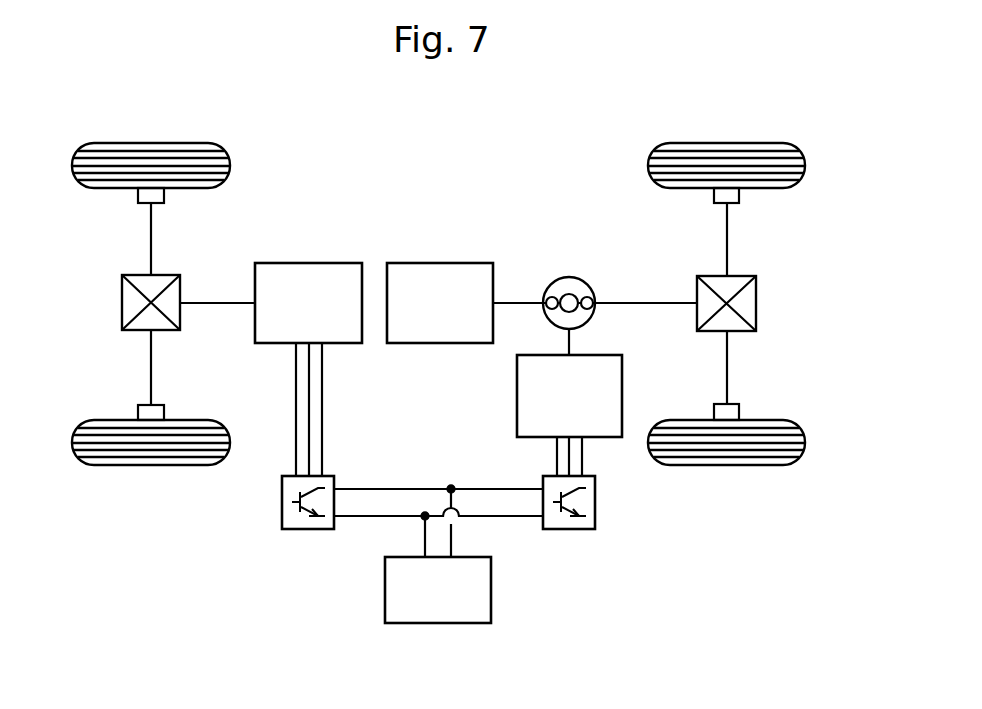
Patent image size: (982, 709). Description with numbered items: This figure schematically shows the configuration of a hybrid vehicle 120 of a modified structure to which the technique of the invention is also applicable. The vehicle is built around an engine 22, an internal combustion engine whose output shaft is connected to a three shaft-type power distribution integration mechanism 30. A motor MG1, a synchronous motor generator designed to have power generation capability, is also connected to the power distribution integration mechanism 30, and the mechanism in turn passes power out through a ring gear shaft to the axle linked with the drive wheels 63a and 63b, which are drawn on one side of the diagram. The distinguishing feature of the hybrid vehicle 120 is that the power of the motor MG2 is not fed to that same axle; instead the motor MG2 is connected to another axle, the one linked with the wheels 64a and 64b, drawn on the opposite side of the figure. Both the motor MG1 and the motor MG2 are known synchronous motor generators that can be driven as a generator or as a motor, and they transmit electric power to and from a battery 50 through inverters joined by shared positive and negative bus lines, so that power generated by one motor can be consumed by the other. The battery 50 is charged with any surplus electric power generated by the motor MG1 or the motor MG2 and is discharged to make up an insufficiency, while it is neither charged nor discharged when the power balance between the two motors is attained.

The hybrid vehicle 120 is at (447, 125).
The engine 22 is at (440, 262).
The power distribution integration mechanism 30 is at (571, 277).
The motor MG1 is at (517, 392).
The motor MG2 is at (309, 262).
The battery 50 is at (492, 588).
The drive wheel 63a is at (727, 142).
The drive wheel 63b is at (727, 466).
The wheel 64a is at (150, 142).
The wheel 64b is at (150, 466).